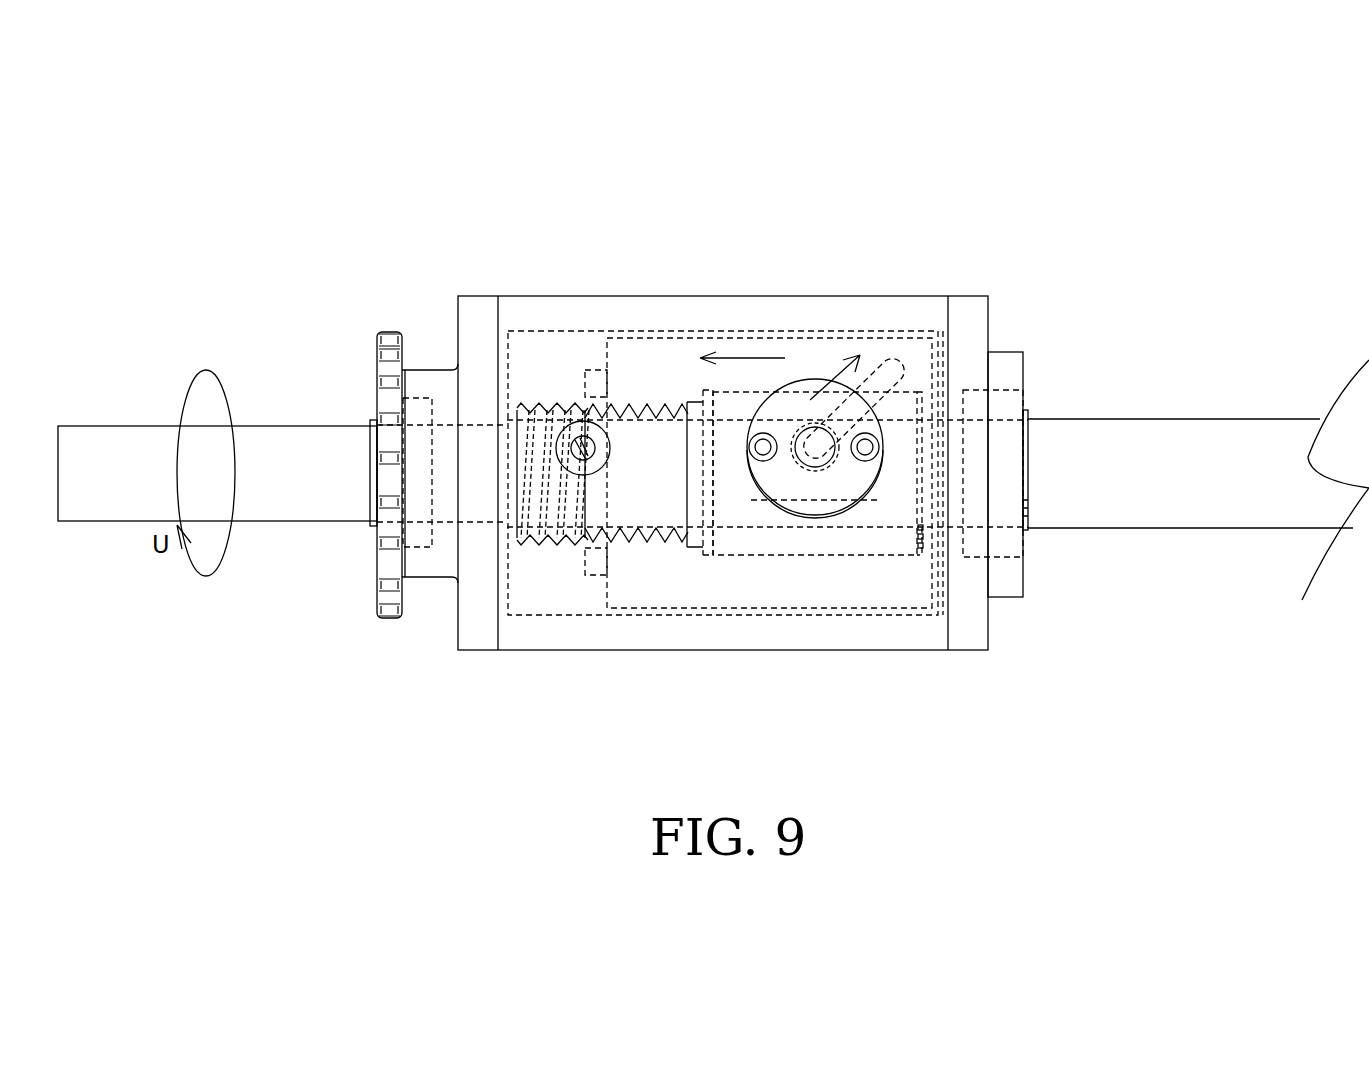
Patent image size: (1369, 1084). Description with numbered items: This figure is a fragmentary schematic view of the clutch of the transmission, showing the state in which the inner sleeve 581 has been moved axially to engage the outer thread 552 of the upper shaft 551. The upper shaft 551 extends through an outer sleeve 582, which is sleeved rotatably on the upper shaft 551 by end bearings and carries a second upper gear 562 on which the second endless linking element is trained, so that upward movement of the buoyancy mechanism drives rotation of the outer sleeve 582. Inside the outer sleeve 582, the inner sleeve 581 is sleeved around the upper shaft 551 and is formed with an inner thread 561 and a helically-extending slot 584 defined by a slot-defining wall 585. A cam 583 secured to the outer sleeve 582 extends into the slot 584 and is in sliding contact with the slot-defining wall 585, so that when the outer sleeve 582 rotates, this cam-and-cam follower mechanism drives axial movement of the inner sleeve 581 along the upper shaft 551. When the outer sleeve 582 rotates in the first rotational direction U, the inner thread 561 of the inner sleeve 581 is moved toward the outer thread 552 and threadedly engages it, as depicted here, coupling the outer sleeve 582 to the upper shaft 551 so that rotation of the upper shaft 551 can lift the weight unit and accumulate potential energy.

The upper shaft 551 is at (1185, 500).
The outer thread 552 is at (545, 412).
The inner thread 561 is at (668, 408).
The second upper gear 562 is at (378, 347).
The inner sleeve 581 is at (770, 337).
The outer sleeve 582 is at (988, 296).
The cam 583 is at (818, 460).
The helically-extending slot 584 is at (888, 400).
The slot-defining wall 585 is at (892, 360).